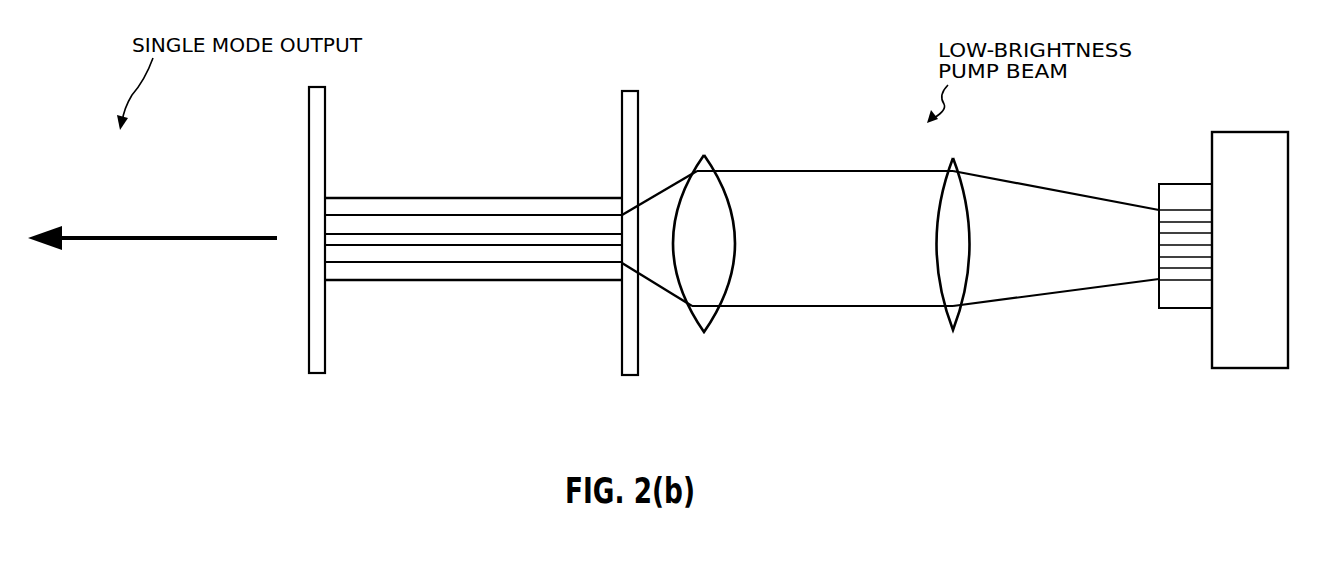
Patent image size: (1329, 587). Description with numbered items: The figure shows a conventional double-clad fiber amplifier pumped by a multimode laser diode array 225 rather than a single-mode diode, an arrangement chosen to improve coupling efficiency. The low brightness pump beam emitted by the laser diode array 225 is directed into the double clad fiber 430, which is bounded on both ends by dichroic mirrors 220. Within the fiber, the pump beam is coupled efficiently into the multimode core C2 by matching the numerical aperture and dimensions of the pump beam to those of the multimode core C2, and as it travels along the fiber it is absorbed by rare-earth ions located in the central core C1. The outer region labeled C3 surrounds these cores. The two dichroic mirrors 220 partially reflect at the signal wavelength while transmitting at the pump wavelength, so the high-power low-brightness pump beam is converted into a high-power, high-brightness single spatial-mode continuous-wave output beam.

The dichroic mirror 220 is at (309, 115).
The double clad fiber 430 is at (436, 112).
The laser diode array 225 is at (1258, 140).
The central core C1 is at (343, 237).
The multimode core C2 is at (442, 222).
The outer cladding C3 is at (522, 203).